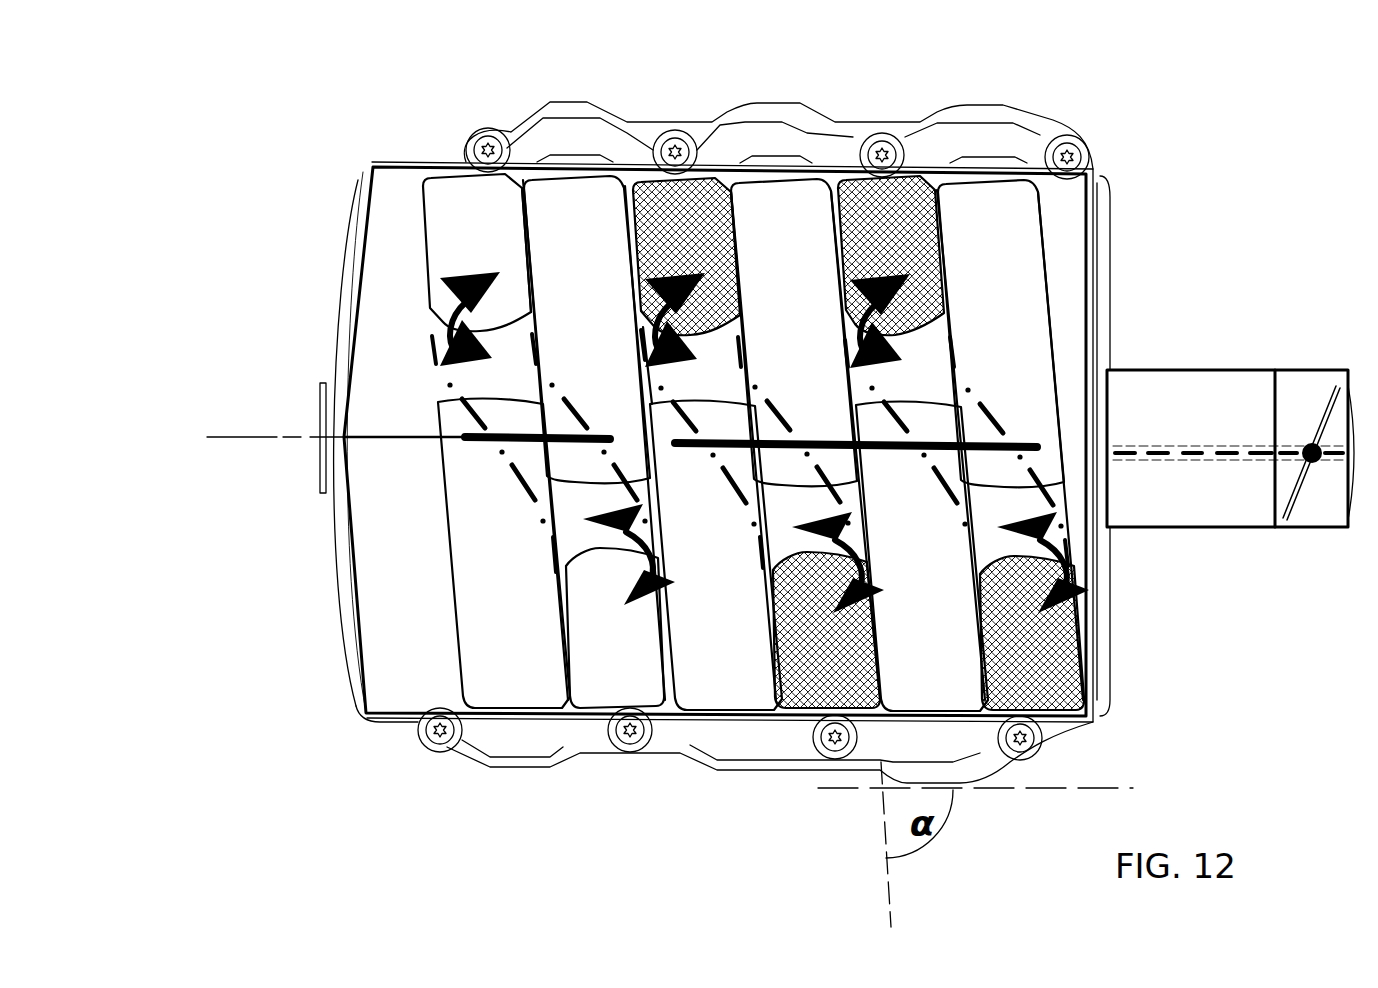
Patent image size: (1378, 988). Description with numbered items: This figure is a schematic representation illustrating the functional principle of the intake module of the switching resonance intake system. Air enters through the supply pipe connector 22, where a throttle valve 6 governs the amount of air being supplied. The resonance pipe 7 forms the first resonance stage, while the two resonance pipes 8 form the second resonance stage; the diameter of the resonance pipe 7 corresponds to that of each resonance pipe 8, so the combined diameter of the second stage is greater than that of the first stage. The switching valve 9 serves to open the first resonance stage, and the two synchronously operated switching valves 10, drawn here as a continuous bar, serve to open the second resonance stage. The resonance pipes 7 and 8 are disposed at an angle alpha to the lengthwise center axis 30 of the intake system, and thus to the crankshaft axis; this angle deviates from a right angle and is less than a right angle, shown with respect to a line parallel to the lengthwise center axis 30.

The throttle valve 6 is at (1311, 383).
The resonance pipe 7 is at (688, 215).
The resonance pipe 8 is at (475, 215).
The switching valve 9 is at (729, 447).
The switching valve 10 is at (527, 443).
The supply pipe connector 22 is at (1233, 383).
The lengthwise center axis 30 is at (255, 437).